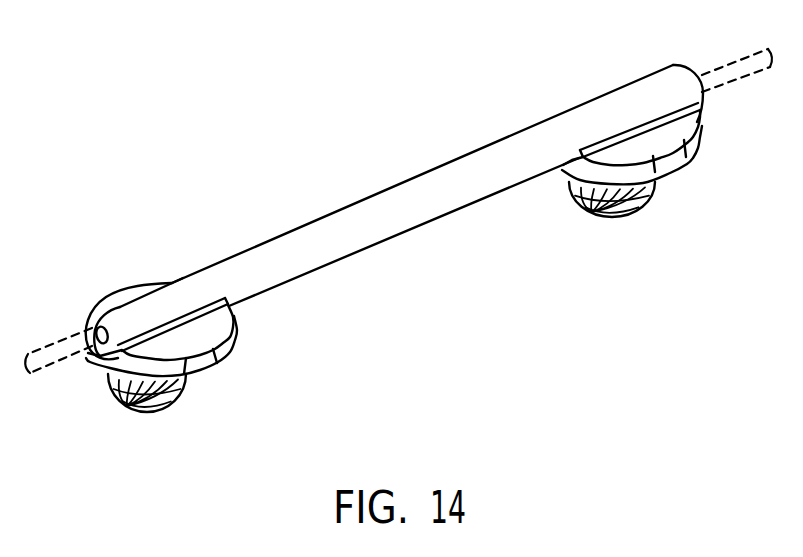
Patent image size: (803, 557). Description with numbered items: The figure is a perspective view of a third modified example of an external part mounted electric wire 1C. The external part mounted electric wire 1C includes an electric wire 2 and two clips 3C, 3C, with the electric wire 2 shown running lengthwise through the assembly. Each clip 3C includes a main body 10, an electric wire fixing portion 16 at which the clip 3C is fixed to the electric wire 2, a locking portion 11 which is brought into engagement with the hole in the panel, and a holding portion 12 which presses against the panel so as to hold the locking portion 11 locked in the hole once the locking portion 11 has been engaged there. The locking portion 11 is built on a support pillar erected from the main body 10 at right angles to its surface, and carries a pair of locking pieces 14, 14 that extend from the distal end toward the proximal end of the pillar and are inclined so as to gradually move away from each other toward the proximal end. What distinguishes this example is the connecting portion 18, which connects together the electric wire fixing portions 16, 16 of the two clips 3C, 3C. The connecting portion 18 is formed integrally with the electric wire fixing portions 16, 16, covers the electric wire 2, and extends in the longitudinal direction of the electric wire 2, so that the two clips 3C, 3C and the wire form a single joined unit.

The external part mounted electric wire 1C is at (476, 88).
The electric wire 2 is at (717, 62).
The main body 10 is at (234, 318).
The locking portion 11 is at (174, 398).
The holding portion 12 is at (222, 360).
The locking pieces 14 is at (117, 388).
The electric wire fixing portion 16 is at (172, 288).
The connecting portion 18 is at (392, 197).
The clip 3C is at (132, 436).